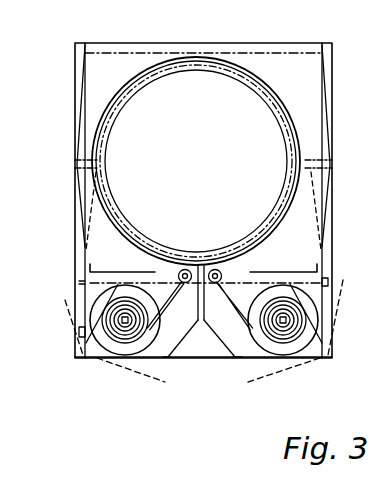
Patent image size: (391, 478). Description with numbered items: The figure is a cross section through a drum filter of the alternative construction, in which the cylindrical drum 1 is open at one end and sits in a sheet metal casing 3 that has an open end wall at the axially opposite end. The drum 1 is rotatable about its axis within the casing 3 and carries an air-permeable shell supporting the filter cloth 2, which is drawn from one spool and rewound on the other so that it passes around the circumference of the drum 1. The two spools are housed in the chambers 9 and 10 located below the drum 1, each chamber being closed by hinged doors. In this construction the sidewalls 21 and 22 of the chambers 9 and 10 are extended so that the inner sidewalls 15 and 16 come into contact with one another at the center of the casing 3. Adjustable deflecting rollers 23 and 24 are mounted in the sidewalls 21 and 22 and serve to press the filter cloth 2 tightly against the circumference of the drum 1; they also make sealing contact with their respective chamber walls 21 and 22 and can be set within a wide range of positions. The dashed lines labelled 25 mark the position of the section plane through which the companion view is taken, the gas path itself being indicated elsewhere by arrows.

The cylindrical drum 1 is at (238, 80).
The filter cloth 2 is at (187, 301).
The casing 3 is at (80, 133).
The chamber 9 is at (97, 359).
The chamber 10 is at (319, 359).
The sidewall 15 is at (183, 359).
The sidewall 16 is at (229, 359).
The sidewall 21 is at (300, 272).
The sidewall 22 is at (112, 272).
The adjustable deflecting roller 23 is at (178, 251).
The adjustable deflecting roller 24 is at (218, 263).
The section line 25 is at (202, 335).